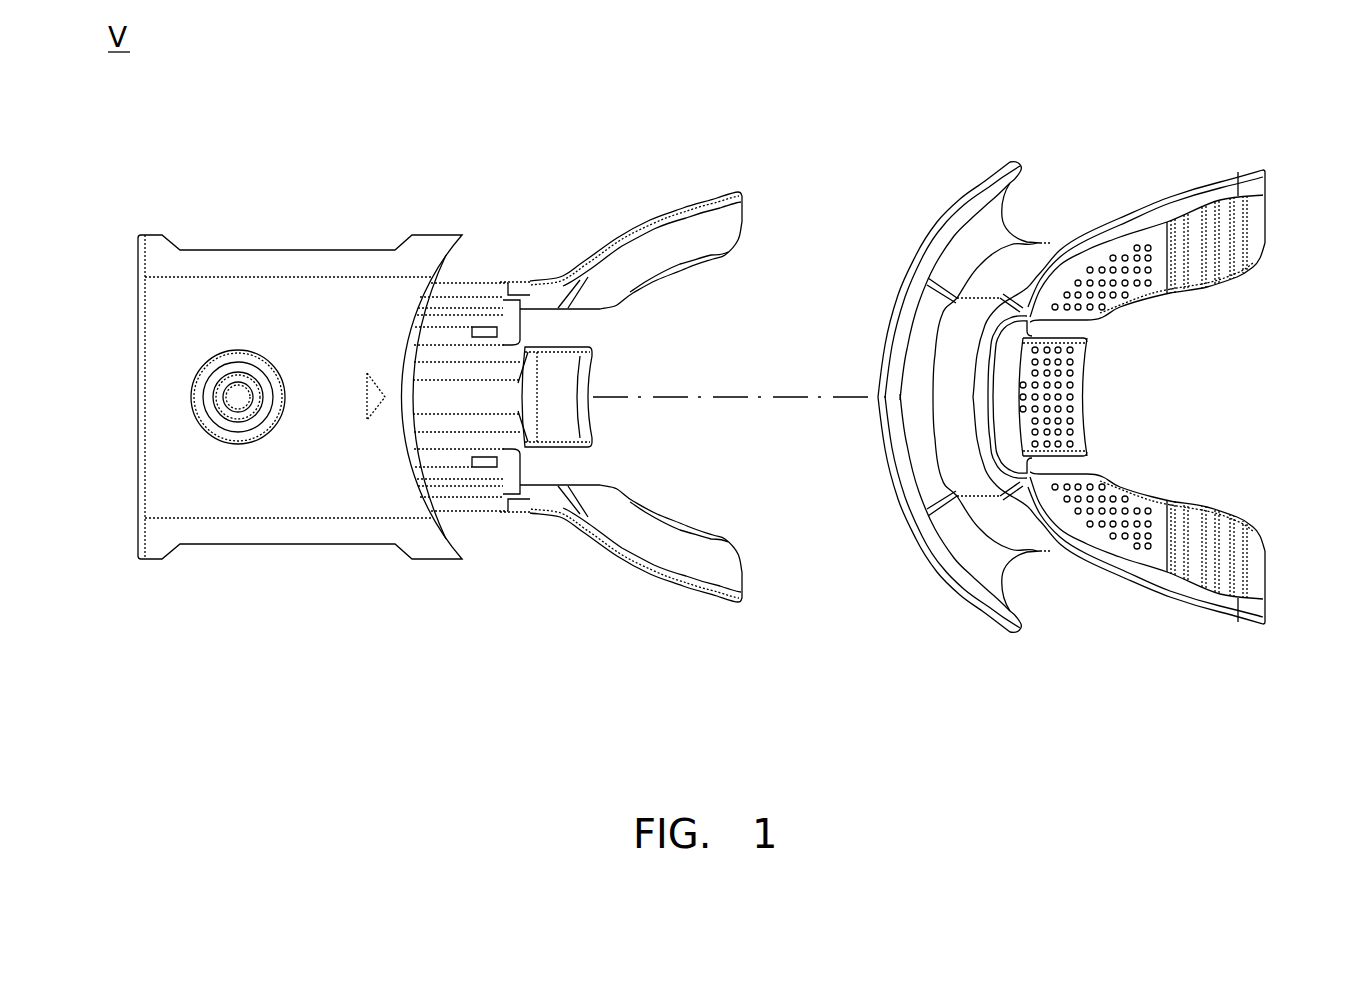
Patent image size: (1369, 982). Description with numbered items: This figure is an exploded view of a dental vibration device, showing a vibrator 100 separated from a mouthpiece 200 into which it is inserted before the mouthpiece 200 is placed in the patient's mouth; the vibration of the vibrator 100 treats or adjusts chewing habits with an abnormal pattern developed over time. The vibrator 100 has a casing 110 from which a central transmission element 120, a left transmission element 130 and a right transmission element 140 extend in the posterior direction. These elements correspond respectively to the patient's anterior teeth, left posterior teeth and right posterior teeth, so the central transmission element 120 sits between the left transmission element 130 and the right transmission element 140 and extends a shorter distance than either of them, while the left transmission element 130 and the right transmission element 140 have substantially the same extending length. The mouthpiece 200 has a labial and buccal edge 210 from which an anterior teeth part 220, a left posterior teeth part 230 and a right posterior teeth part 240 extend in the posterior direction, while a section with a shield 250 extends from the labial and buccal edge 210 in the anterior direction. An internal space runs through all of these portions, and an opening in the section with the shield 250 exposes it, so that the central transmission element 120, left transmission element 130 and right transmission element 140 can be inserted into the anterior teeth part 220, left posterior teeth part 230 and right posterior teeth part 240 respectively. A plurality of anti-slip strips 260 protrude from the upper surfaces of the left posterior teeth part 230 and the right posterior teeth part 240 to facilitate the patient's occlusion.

The vibrator 100 is at (155, 231).
The casing 110 is at (305, 490).
The central transmission element 120 is at (570, 423).
The left transmission element 130 is at (675, 251).
The right transmission element 140 is at (675, 543).
The mouthpiece 200 is at (1243, 160).
The labial and buccal edge 210 is at (1103, 553).
The anterior teeth part 220 is at (1072, 390).
The left posterior teeth part 230 is at (1257, 222).
The right posterior teeth part 240 is at (1255, 573).
The section with a shield 250 is at (983, 563).
The anti-slip strips 260 is at (1208, 228).